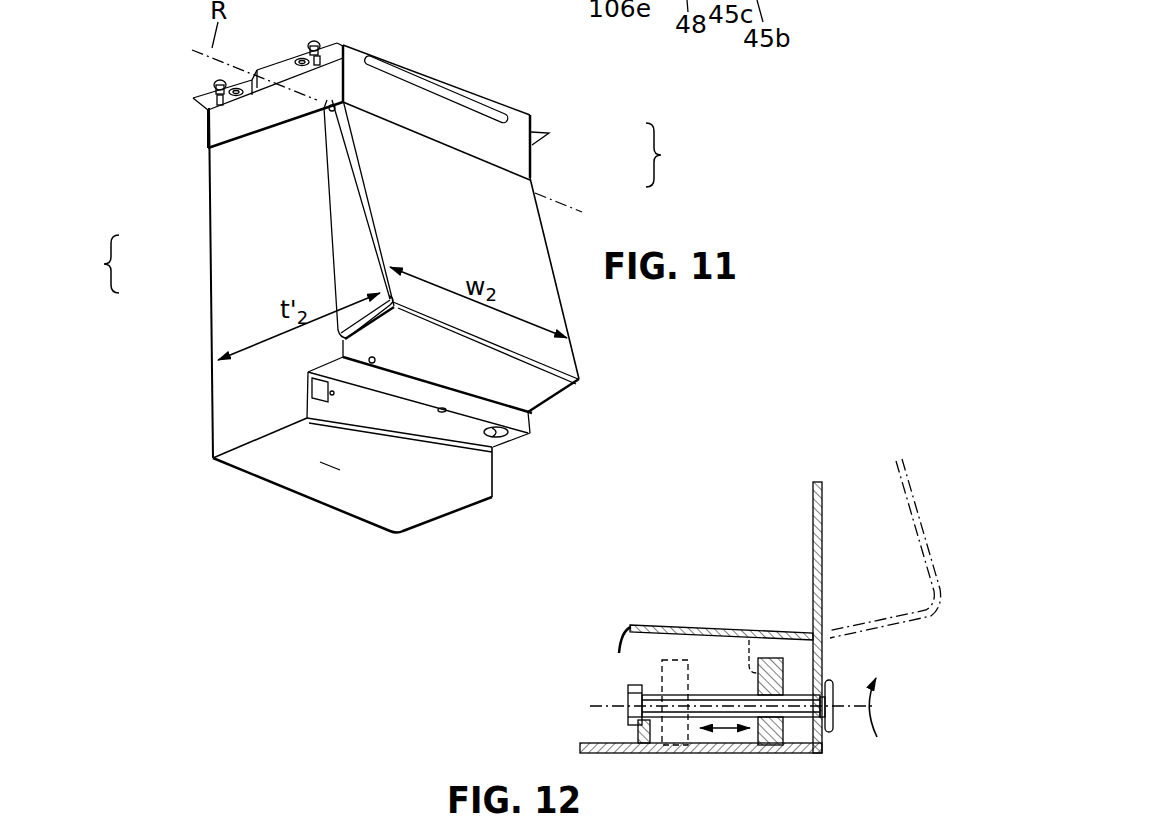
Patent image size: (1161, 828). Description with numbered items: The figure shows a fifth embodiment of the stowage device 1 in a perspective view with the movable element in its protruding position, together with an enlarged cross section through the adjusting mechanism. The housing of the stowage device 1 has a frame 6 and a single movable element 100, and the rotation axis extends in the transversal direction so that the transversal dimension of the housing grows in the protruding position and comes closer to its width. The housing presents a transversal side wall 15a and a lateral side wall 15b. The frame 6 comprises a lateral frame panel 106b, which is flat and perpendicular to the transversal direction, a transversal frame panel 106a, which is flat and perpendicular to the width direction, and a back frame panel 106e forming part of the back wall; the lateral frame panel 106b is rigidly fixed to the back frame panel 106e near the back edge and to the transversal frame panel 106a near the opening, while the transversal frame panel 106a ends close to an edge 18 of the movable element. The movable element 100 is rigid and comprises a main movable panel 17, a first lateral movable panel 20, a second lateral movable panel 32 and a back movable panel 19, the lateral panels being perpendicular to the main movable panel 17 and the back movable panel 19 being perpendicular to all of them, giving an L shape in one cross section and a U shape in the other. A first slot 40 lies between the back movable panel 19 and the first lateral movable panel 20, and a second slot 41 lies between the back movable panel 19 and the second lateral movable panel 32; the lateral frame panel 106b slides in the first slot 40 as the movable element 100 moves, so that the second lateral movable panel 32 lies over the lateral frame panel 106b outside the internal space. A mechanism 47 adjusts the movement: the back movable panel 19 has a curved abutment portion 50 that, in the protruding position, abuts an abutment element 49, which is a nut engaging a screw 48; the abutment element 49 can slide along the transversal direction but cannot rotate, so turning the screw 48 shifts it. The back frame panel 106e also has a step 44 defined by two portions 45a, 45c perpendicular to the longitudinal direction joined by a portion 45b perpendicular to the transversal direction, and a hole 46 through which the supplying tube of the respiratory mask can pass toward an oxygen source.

In FIG. 11, the stowage device 1 is at (168, 453).
In FIG. 11, the frame 6 is at (233, 479).
In FIG. 11, the transversal side wall 15a is at (679, 155).
In FIG. 11, the lateral side wall 15b is at (88, 264).
In FIG. 11, the main movable panel 17 is at (523, 222).
In FIG. 12, the main movable panel 17 is at (823, 508).
In FIG. 11, the edge of the movable element 18 is at (380, 116).
In FIG. 11, the back movable panel 19 is at (483, 380).
In FIG. 12, the back movable panel 19 is at (660, 626).
In FIG. 12, the first lateral movable panel 20 is at (726, 642).
In FIG. 11, the second lateral movable panel 32 is at (353, 285).
In FIG. 11, the first slot 40 is at (370, 336).
In FIG. 11, the second slot 41 is at (550, 405).
In FIG. 11, the step 44 is at (451, 465).
In FIG. 11, the portion of the step 45a is at (330, 470).
In FIG. 11, the portion of the step 45b is at (420, 440).
In FIG. 11, the portion of the step 45c is at (395, 387).
In FIG. 11, the hole 46 is at (501, 448).
In FIG. 12, the mechanism 47 is at (829, 672).
In FIG. 12, the screw 48 is at (832, 718).
In FIG. 12, the abutment element 49 is at (677, 727).
In FIG. 12, the abutment portion 50 is at (618, 637).
In FIG. 11, the movable element 100 is at (598, 343).
In FIG. 11, the transversal frame panel 106a is at (517, 167).
In FIG. 11, the lateral frame panel 106b is at (232, 290).
In FIG. 11, the back frame panel 106e is at (285, 460).